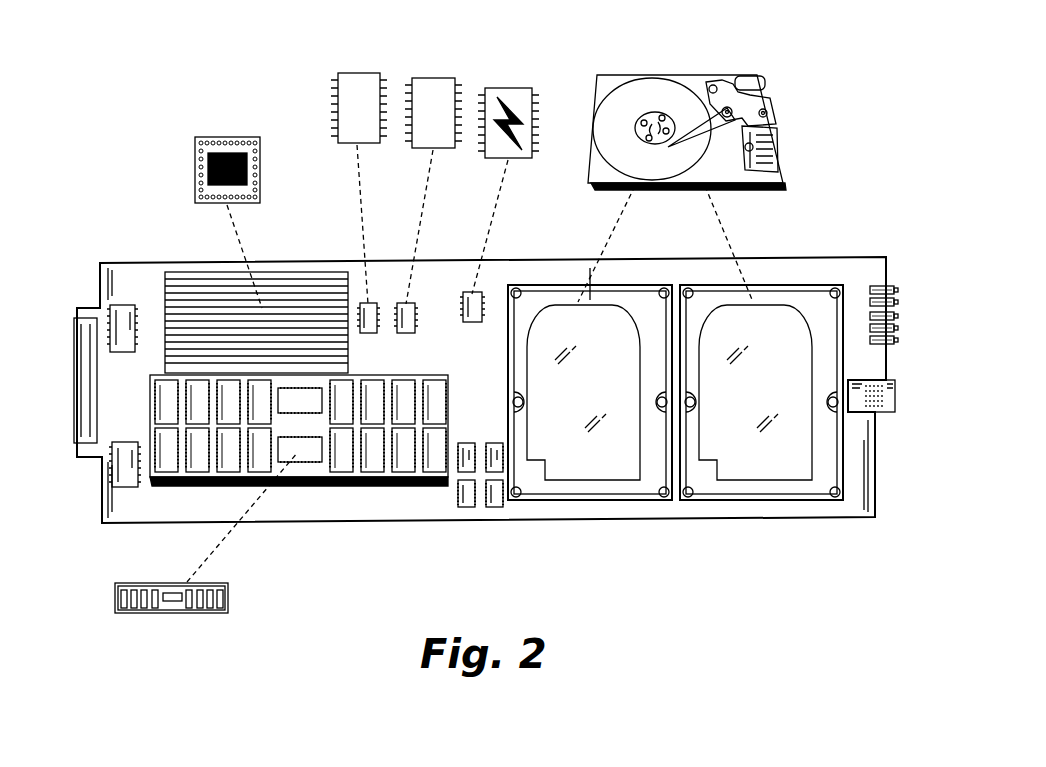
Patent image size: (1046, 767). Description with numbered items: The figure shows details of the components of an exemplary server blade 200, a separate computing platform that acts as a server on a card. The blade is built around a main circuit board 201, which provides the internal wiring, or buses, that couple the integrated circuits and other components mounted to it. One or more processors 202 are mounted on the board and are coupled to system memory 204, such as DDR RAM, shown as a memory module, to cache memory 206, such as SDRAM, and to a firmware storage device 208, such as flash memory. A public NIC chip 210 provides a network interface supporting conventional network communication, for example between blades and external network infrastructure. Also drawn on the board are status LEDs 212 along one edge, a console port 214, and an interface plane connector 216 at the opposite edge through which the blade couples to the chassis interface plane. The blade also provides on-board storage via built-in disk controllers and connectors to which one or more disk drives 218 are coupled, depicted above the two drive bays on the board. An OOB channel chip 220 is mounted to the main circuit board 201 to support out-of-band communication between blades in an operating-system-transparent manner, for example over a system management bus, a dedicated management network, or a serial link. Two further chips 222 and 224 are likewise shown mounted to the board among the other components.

The blade 200 is at (608, 582).
The main circuit board 201 is at (790, 262).
The processor 202 is at (259, 166).
The system memory 204 is at (228, 597).
The cache memory 206 is at (474, 495).
The firmware storage device 208 is at (525, 95).
The public NIC chip 210 is at (119, 468).
The status LEDs 212 is at (893, 285).
The RJ-45 console port 214 is at (886, 415).
The interface plane connector 216 is at (68, 345).
The disk drive 218 is at (777, 129).
The OOB channel chip 220 is at (120, 326).
The non-volatile memory 222 is at (365, 77).
The non-volatile memory 224 is at (440, 85).